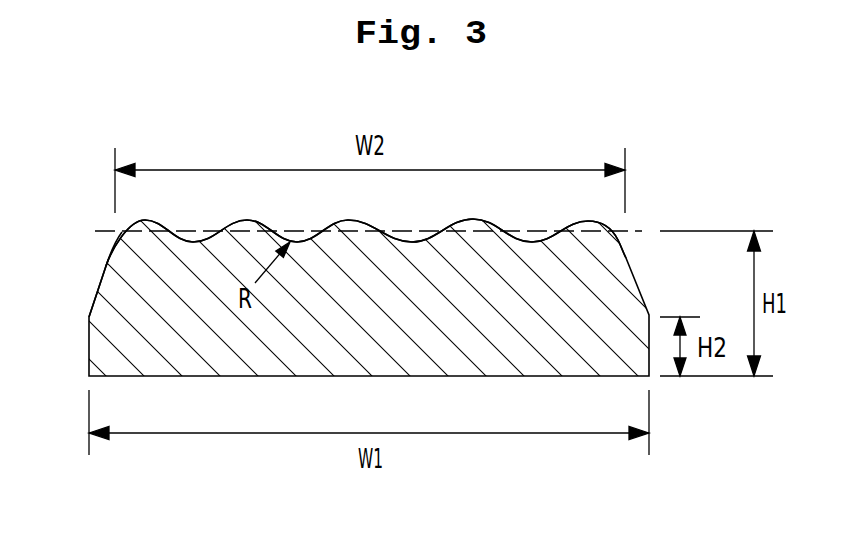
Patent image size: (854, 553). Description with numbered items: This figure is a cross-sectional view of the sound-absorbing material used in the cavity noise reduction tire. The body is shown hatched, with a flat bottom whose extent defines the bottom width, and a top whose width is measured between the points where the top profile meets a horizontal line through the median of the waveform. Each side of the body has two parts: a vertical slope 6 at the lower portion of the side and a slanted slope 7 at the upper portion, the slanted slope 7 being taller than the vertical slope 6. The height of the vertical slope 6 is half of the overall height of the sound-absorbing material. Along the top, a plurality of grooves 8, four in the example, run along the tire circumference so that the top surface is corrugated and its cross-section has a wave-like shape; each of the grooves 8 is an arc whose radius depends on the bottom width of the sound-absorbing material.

The vertical slope 6 is at (89, 347).
The slanted slope 7 is at (108, 258).
The grooves 8 is at (200, 227).